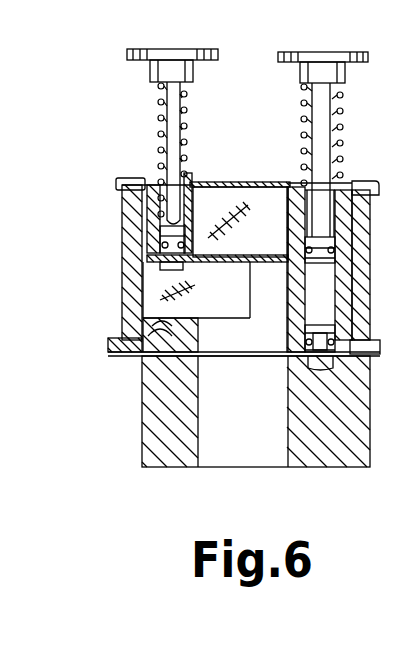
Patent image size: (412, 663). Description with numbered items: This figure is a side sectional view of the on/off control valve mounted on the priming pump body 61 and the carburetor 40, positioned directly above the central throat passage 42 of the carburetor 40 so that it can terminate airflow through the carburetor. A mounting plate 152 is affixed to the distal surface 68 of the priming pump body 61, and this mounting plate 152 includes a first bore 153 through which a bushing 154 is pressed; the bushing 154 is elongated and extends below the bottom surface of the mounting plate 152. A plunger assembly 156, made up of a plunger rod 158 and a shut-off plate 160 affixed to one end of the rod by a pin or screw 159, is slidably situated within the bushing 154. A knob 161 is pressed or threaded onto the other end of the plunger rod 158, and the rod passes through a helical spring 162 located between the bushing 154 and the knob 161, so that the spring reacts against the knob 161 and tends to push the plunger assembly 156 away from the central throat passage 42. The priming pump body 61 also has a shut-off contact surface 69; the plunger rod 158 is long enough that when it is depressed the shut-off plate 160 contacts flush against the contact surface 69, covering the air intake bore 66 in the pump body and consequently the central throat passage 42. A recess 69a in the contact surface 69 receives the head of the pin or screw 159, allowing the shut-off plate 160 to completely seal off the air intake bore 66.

The carburetor 40 is at (365, 446).
The central throat passage 42 is at (254, 412).
The priming pump body 61 is at (345, 300).
The air intake bore 66 is at (260, 346).
The distal surface 68 is at (352, 205).
The shut-off contact surface 69 is at (141, 305).
The recess 69a is at (153, 358).
The mounting plate 152 is at (118, 178).
The first bore 153 is at (197, 197).
The bushing 154 is at (145, 218).
The plunger assembly 156 is at (138, 76).
The plunger rod 158 is at (180, 110).
The pin or screw 159 is at (167, 270).
The shut-off plate 160 is at (240, 262).
The knob 161 is at (171, 49).
The helical spring 162 is at (160, 118).